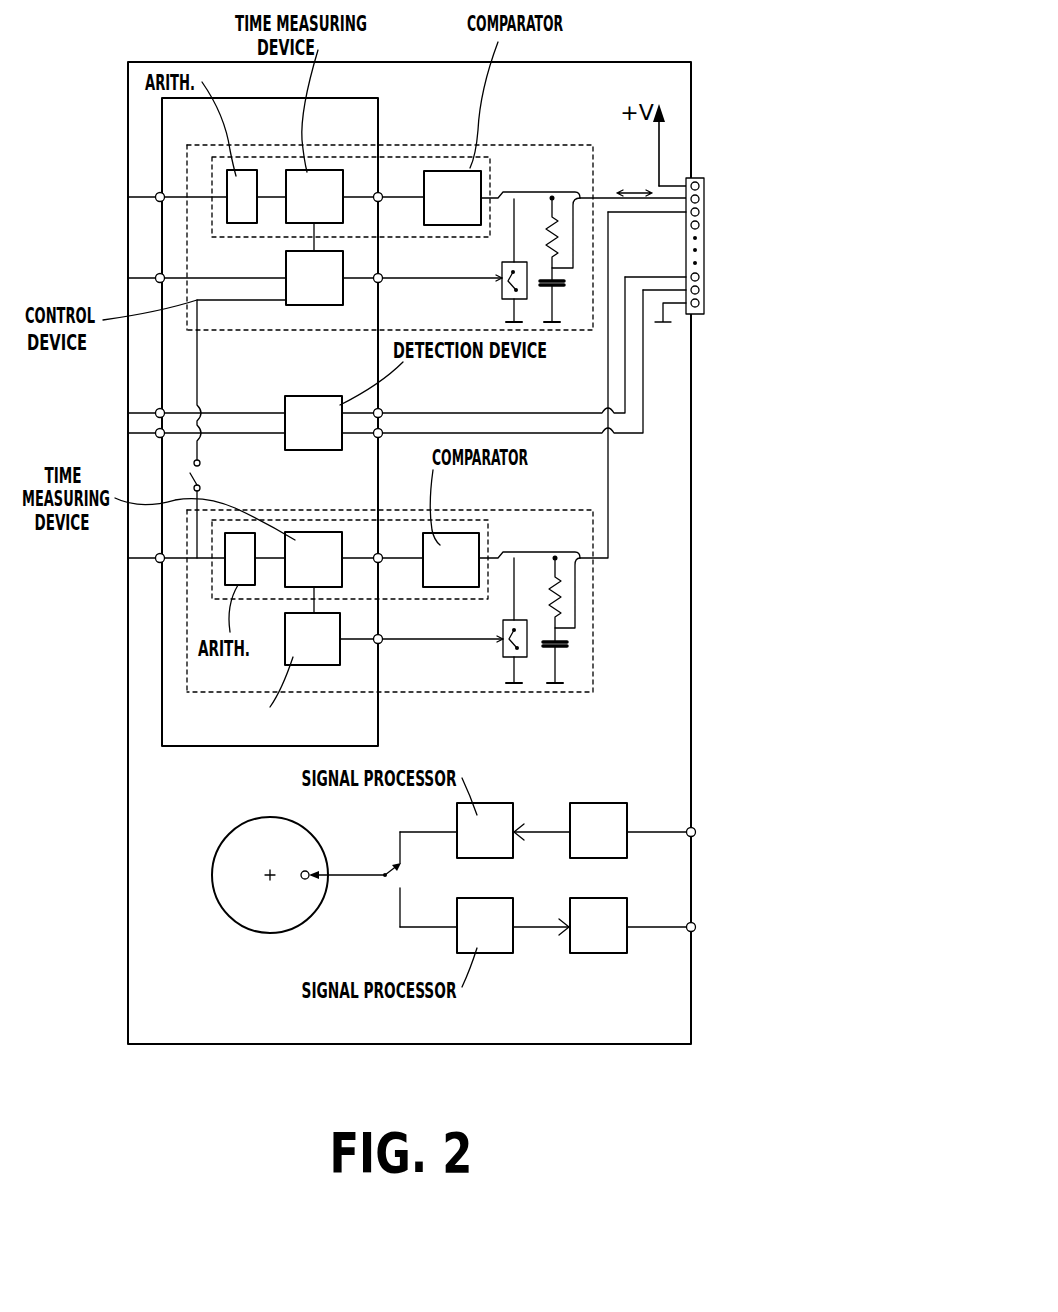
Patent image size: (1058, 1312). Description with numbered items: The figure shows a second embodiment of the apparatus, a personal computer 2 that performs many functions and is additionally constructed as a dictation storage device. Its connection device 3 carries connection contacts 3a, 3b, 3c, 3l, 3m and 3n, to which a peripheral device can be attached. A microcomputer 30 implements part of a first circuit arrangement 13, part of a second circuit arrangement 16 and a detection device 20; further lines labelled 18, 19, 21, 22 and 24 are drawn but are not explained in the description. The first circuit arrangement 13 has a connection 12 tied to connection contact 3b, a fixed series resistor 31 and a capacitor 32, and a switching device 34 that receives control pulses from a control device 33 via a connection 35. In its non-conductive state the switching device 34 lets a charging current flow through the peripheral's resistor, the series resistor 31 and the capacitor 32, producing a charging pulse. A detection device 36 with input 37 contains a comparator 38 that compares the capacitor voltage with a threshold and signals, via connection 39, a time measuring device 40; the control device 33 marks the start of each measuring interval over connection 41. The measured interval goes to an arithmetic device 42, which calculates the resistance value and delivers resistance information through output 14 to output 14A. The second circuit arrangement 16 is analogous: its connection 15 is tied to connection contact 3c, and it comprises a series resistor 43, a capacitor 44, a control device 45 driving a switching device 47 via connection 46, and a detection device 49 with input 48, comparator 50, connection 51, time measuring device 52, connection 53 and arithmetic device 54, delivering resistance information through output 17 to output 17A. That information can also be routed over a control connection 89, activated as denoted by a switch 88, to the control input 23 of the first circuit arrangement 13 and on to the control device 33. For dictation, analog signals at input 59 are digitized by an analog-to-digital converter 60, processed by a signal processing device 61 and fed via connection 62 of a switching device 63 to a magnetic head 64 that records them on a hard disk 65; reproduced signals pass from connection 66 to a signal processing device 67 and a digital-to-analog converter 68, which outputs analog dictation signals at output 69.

The personal computer 2 is at (208, 1045).
The connection device 3 is at (722, 260).
The connection contact 3a is at (699, 186).
The connection contact 3b is at (704, 199).
The connection contact 3c is at (700, 214).
The connection contact 3l is at (700, 276).
The connection contact 3m is at (704, 290).
The connection contact 3n is at (700, 305).
The connection 12 is at (597, 197).
The first circuit arrangement 13 is at (568, 145).
The output 14 is at (185, 193).
The output 14A is at (128, 196).
The connection 15 is at (592, 560).
The second circuit arrangement 16 is at (568, 510).
The output 17 is at (186, 560).
The output 17A is at (155, 559).
The detection line 18 is at (382, 411).
The detection line 19 is at (382, 436).
The detection device 20 is at (328, 394).
The line 21 is at (156, 434).
The line 22 is at (156, 412).
The control input 23 is at (199, 333).
The line 24 is at (185, 277).
The microcomputer 30 is at (253, 748).
The series resistor 31 is at (555, 222).
The capacitor 32 is at (563, 285).
The control device 33 is at (323, 298).
The switching device 34 is at (503, 293).
The connection 35 is at (380, 281).
The detection device 36 is at (490, 157).
The input 37 is at (499, 193).
The comparator 38 is at (453, 190).
The connection 39 is at (380, 200).
The time measuring device 40 is at (313, 185).
The connection 41 is at (312, 243).
The arithmetic device 42 is at (242, 180).
The series resistor 43 is at (567, 604).
The capacitor 44 is at (568, 646).
The control device 45 is at (323, 658).
The connection 46 is at (381, 642).
The switching device 47 is at (503, 652).
The input 48 is at (494, 557).
The detection device 49 is at (488, 520).
The comparator 50 is at (452, 540).
The connection 51 is at (381, 561).
The time measuring device 52 is at (313, 543).
The connection 53 is at (312, 604).
The arithmetic device 54 is at (231, 582).
The input 59 is at (696, 831).
The analog-to-digital converter 60 is at (617, 812).
The signal processing device 61 is at (493, 812).
The connection 62 is at (400, 865).
The switching device 63 is at (404, 876).
The magnetic head 64 is at (306, 880).
The hard disk 65 is at (270, 912).
The connection 66 is at (400, 887).
The signal processing device 67 is at (490, 940).
The digital-to-analog converter 68 is at (608, 940).
The output 69 is at (696, 926).
The switch 88 is at (192, 477).
The control connection 89 is at (199, 397).